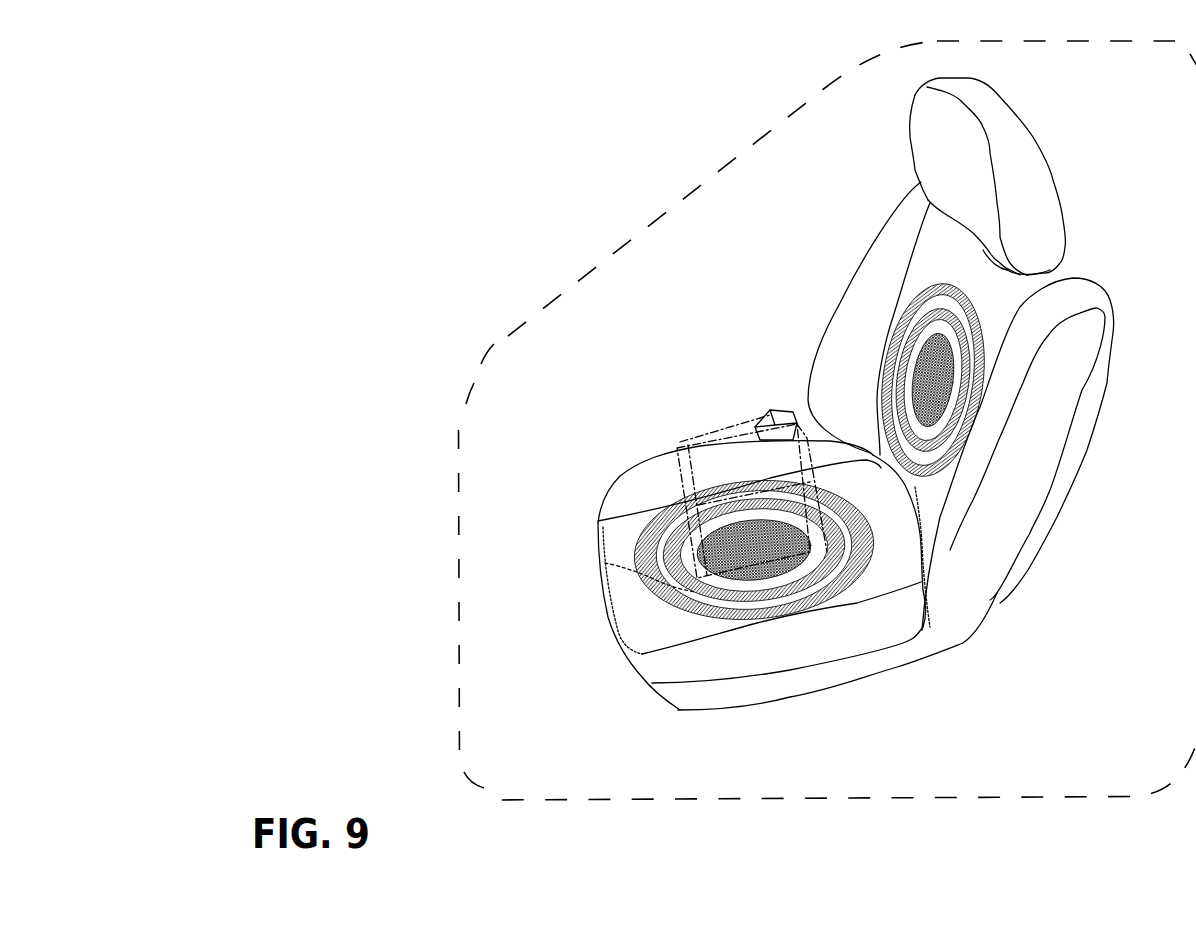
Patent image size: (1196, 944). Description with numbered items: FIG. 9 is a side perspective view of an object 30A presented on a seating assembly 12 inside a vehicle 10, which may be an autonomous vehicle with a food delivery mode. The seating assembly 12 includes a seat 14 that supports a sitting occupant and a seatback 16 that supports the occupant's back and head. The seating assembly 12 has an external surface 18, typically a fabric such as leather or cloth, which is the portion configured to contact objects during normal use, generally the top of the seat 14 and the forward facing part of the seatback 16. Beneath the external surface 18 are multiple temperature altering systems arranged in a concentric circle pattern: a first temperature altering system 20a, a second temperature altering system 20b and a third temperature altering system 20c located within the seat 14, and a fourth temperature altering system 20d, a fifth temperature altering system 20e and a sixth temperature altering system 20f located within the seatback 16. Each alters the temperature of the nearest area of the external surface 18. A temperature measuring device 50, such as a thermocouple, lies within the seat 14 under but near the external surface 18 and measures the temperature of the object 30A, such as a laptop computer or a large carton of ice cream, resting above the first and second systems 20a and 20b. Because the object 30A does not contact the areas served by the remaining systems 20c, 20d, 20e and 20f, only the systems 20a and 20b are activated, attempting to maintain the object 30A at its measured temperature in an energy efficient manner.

The vehicle 10 is at (762, 137).
The seating assembly 12 is at (1023, 578).
The seat 14 is at (897, 620).
The seatback 16 is at (1068, 305).
The external surface 18 is at (925, 535).
The first temperature altering system 20a is at (737, 563).
The second temperature altering system 20b is at (793, 580).
The third temperature altering system 20c is at (855, 578).
The fourth temperature altering system 20d is at (940, 373).
The fifth temperature altering system 20e is at (963, 400).
The sixth temperature altering system 20f is at (942, 457).
The object 30A is at (675, 487).
The temperature measuring device 50 is at (605, 563).